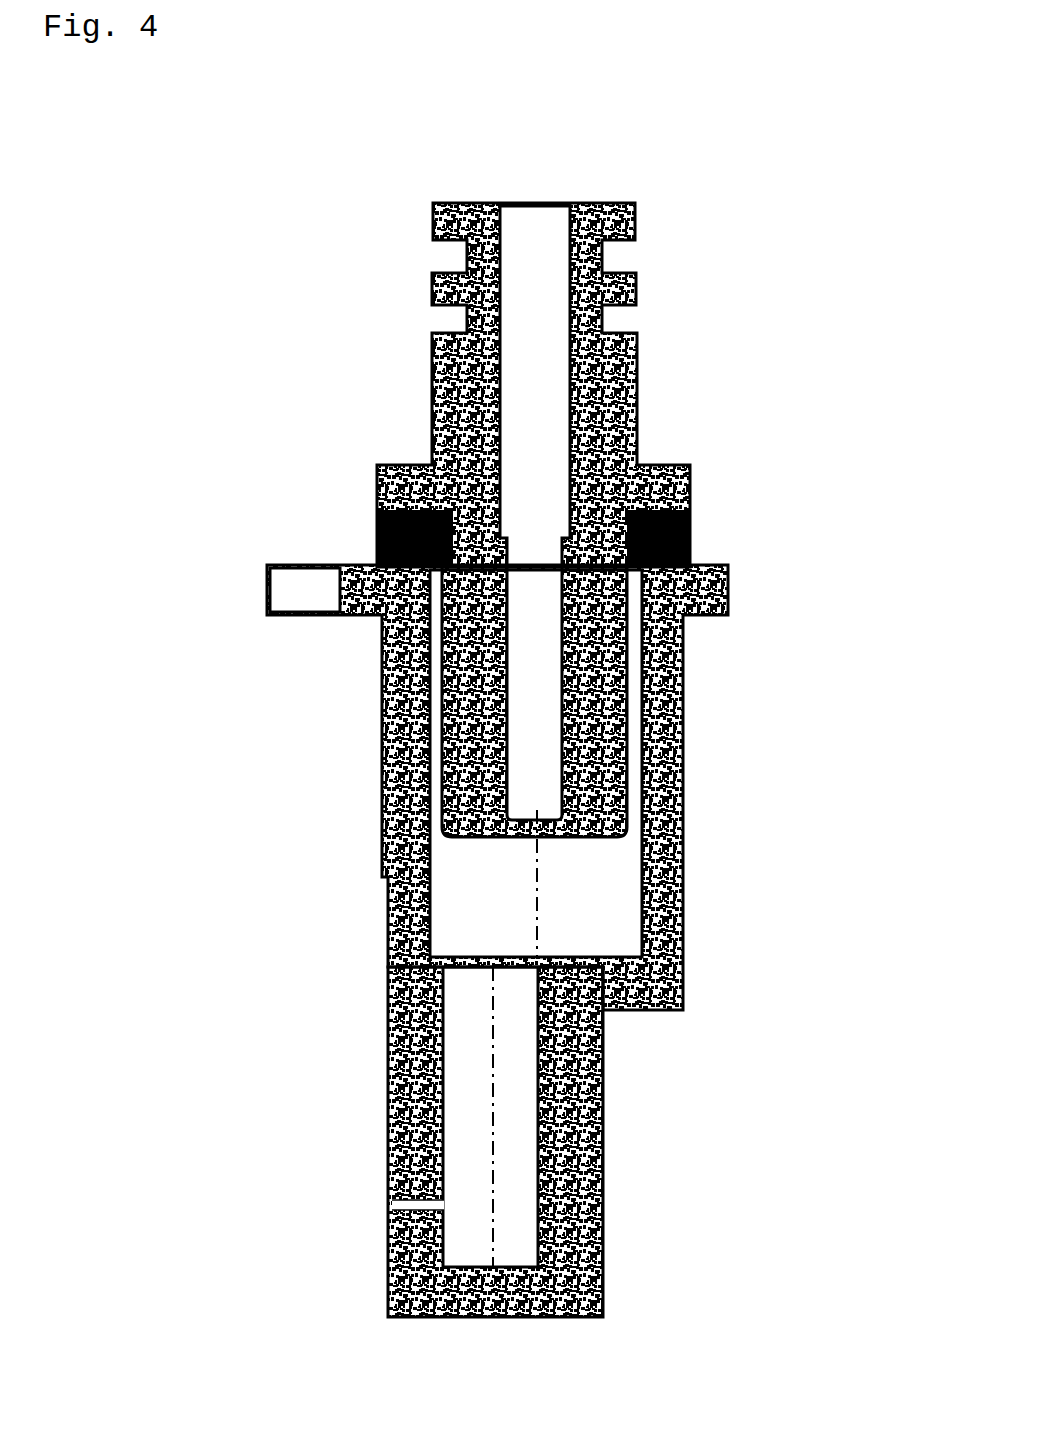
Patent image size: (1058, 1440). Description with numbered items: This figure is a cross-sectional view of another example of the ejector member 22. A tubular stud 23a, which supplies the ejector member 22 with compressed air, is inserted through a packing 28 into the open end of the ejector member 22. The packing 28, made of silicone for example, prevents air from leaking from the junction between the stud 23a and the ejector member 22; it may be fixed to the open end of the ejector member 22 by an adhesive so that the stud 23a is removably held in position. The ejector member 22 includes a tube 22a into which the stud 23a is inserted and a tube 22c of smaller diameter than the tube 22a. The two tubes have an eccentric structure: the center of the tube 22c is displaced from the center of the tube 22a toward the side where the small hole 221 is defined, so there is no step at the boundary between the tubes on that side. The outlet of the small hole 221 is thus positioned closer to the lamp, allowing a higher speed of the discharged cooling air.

The tubular stud 23a is at (637, 392).
The packing 28 is at (690, 538).
The ejector member 22 is at (525, 941).
The tube 22a is at (683, 722).
The tube 22c is at (600, 1158).
The small hole 221 is at (400, 1207).